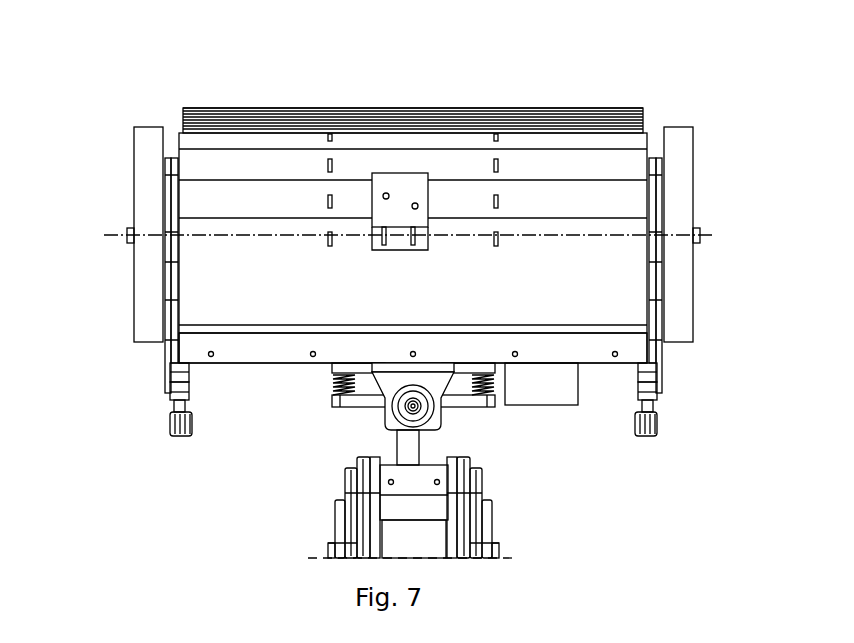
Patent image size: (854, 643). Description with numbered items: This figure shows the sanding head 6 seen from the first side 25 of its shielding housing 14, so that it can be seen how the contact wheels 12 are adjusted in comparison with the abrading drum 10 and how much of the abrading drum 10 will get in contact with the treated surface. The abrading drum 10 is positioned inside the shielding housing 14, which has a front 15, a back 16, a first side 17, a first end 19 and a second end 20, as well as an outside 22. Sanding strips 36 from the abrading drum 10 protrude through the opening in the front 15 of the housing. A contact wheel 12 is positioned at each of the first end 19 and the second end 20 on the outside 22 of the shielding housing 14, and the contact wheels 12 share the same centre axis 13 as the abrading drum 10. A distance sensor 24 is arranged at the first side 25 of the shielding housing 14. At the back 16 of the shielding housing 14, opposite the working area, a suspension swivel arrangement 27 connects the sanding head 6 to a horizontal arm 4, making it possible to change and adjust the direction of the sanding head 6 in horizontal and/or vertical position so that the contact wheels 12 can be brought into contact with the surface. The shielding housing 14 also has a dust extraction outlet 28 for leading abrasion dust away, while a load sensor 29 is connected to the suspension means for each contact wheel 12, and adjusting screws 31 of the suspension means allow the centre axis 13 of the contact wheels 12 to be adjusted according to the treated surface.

The horizontal arm 4 is at (428, 535).
The sanding head 6 is at (158, 91).
The abrading drum 10 is at (548, 97).
The contact wheel 12 is at (147, 141).
The centre axis 13 is at (110, 234).
The shielding housing 14 is at (620, 305).
The front 15 is at (268, 97).
The back 16 is at (222, 364).
The first side 17 is at (597, 158).
The first end 19 is at (706, 264).
The second end 20 is at (119, 292).
The outside 22 is at (271, 375).
The distance sensor 24 is at (399, 190).
The first side 25 is at (619, 160).
The suspension swivel arrangement 27 is at (432, 412).
The dust extraction outlet 28 is at (577, 395).
The load sensor 29 is at (180, 375).
The adjusting screw 31 is at (170, 423).
The sanding strip 36 is at (494, 107).